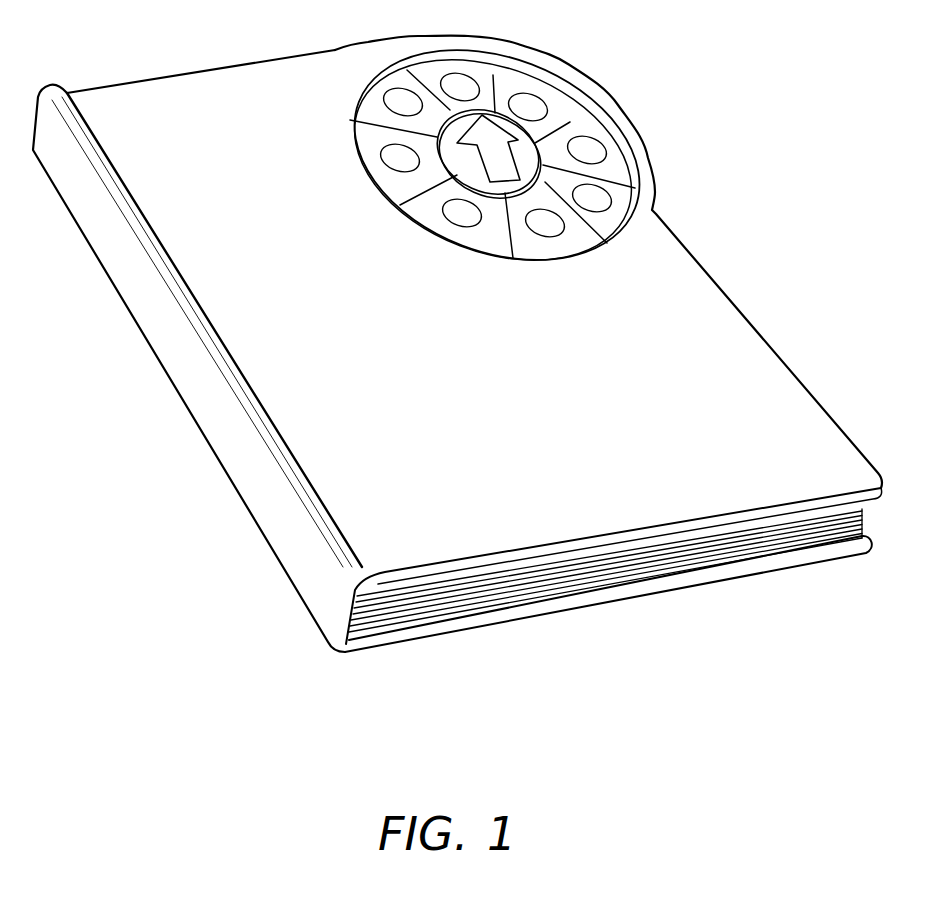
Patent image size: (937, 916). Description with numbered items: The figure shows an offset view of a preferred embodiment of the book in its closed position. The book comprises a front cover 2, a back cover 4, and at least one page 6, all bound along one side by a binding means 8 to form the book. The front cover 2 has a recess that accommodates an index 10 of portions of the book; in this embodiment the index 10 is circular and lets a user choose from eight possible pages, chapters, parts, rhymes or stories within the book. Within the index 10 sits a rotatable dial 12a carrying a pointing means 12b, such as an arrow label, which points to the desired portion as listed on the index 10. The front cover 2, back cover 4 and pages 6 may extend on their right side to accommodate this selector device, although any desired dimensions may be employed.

The front cover 2 is at (362, 503).
The back cover 4 is at (540, 615).
The page 6 is at (588, 573).
The binding means 8 is at (233, 433).
The index 10 is at (537, 250).
The rotatable dial 12a is at (530, 155).
The pointing means 12b is at (497, 110).